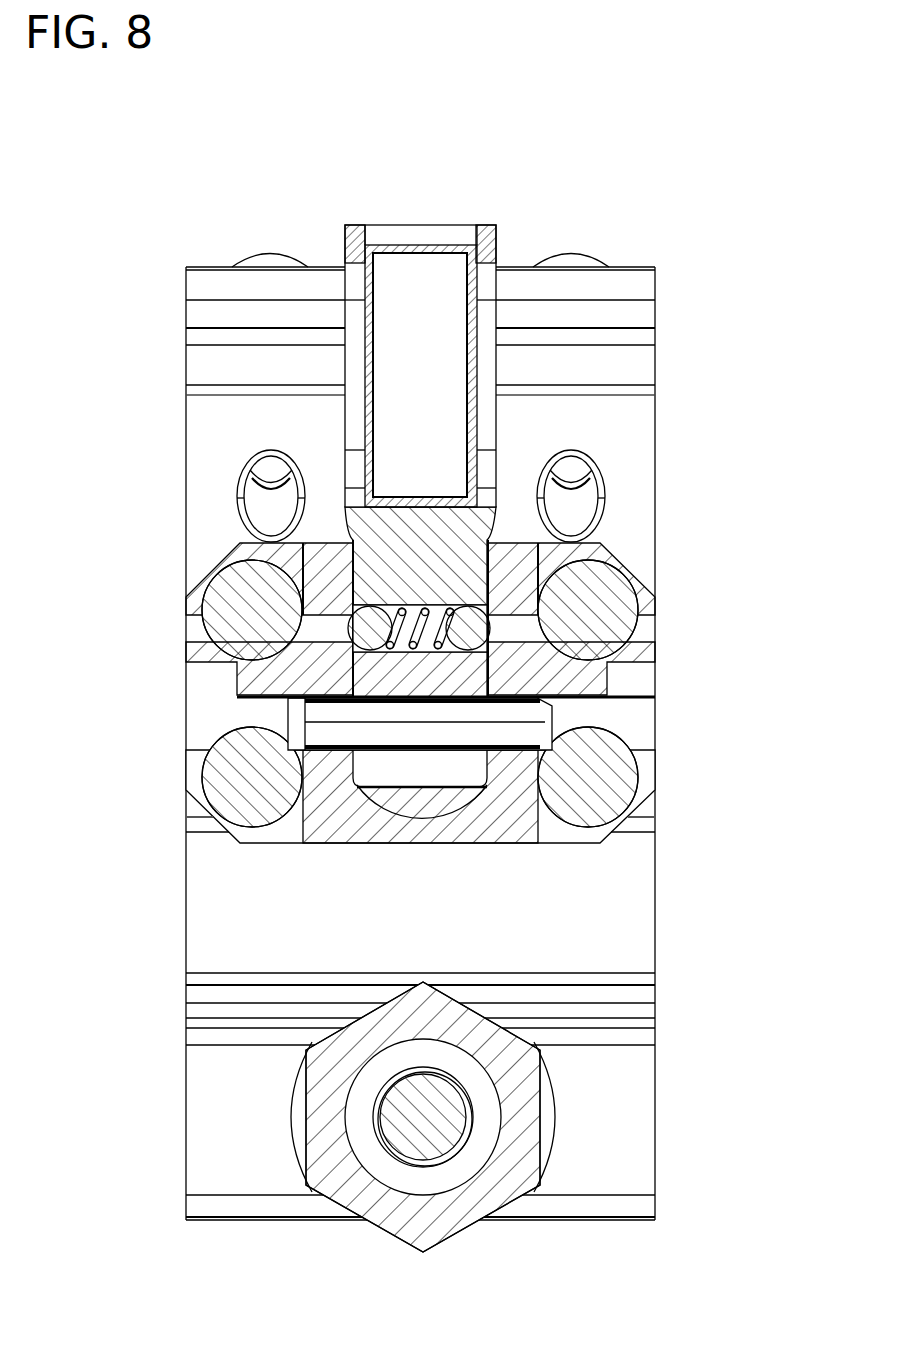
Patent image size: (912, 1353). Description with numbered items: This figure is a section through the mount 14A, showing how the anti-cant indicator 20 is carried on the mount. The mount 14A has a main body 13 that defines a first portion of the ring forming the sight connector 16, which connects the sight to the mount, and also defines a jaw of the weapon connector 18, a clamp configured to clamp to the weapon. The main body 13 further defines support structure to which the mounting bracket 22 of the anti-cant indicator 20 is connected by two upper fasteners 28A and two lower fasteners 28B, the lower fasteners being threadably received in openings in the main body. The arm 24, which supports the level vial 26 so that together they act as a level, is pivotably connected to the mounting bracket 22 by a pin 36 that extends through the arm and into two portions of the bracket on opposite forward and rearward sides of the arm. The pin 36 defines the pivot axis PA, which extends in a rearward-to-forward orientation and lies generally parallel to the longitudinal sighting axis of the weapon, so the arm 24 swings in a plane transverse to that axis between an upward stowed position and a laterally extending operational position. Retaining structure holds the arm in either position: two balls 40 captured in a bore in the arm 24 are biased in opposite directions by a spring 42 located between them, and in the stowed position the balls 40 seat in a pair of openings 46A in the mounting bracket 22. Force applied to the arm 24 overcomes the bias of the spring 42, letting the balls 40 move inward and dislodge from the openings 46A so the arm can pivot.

The mount 14A is at (256, 162).
The main body 13 is at (612, 428).
The sight connector 16 is at (664, 298).
The weapon connector 18 is at (664, 1172).
The anti-cant indicator 20 is at (334, 414).
The mounting bracket 22 is at (555, 840).
The arm 24 is at (345, 412).
The level vial 26 is at (347, 348).
The upper fasteners 28A is at (205, 590).
The lower fasteners 28B is at (617, 780).
The pin 36 is at (292, 683).
The balls 40 is at (290, 550).
The spring 42 is at (413, 610).
The openings 46A is at (295, 630).
The pivot axis PA is at (430, 725).